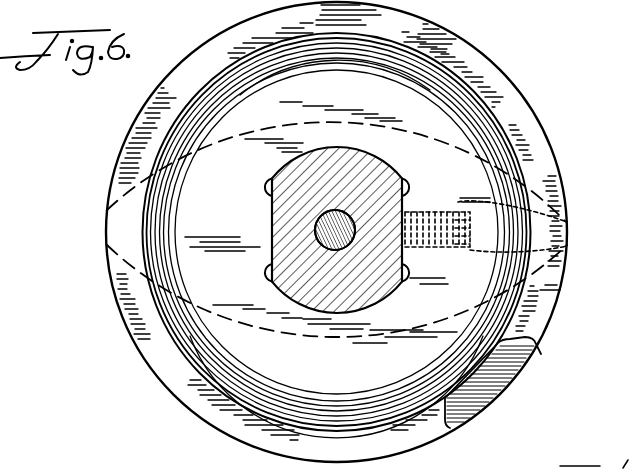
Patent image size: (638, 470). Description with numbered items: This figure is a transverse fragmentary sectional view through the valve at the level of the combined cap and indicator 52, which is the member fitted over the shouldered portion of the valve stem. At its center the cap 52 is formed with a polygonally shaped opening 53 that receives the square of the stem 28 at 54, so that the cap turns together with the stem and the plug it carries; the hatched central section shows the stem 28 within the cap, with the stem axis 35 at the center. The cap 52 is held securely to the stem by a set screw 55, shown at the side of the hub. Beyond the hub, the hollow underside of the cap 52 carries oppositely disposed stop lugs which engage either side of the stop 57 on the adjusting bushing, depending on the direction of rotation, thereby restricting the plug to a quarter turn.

The combined cap and indicator 52 is at (500, 52).
The stem 28 is at (403, 199).
The shaft 35 is at (335, 212).
The polygonally shaped opening 53 is at (272, 226).
The square-receiving location 54 is at (403, 255).
The set screw 55 is at (434, 213).
The stop 57 is at (520, 370).